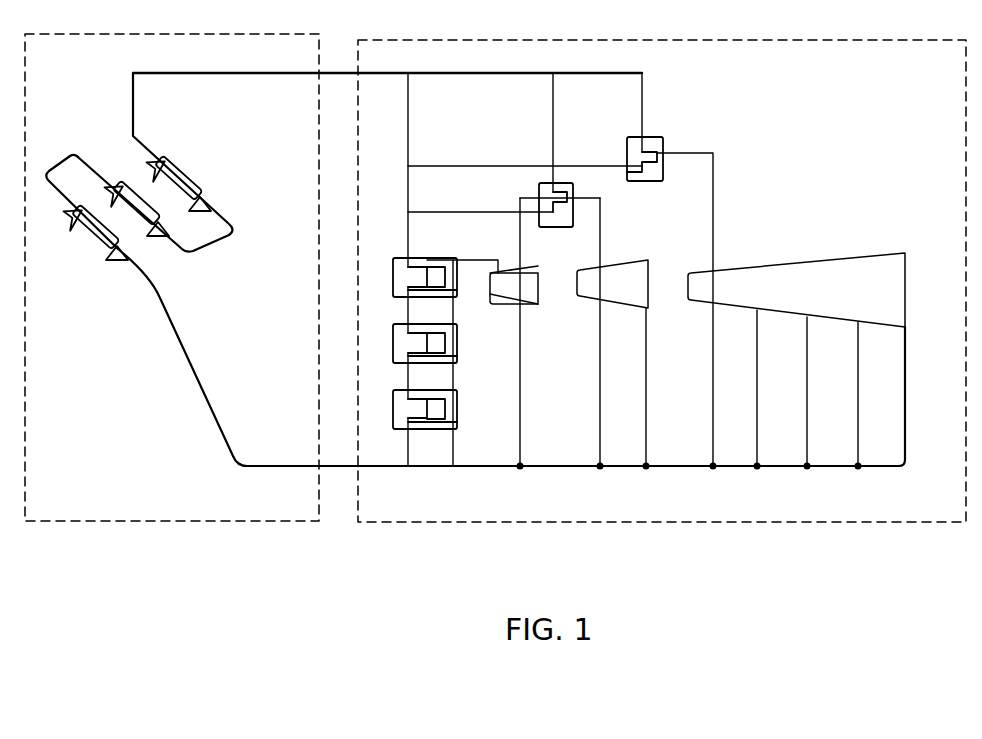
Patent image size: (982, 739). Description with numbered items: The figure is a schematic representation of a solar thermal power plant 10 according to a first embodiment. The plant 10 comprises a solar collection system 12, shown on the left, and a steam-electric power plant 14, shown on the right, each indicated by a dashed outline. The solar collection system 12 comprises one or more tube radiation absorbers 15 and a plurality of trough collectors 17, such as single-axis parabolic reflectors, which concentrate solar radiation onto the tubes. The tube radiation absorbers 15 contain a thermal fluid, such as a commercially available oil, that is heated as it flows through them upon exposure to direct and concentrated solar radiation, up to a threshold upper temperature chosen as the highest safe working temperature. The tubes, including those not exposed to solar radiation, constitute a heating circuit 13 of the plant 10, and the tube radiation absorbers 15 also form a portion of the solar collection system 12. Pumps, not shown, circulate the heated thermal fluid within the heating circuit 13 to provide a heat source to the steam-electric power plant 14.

The solar thermal power plant 10 is at (495, 340).
The solar collection system 12 is at (213, 522).
The heating circuit 13 is at (169, 73).
The steam-electric power plant 14 is at (747, 523).
The tube radiation absorber 15 is at (207, 73).
The trough collector 17 is at (127, 185).